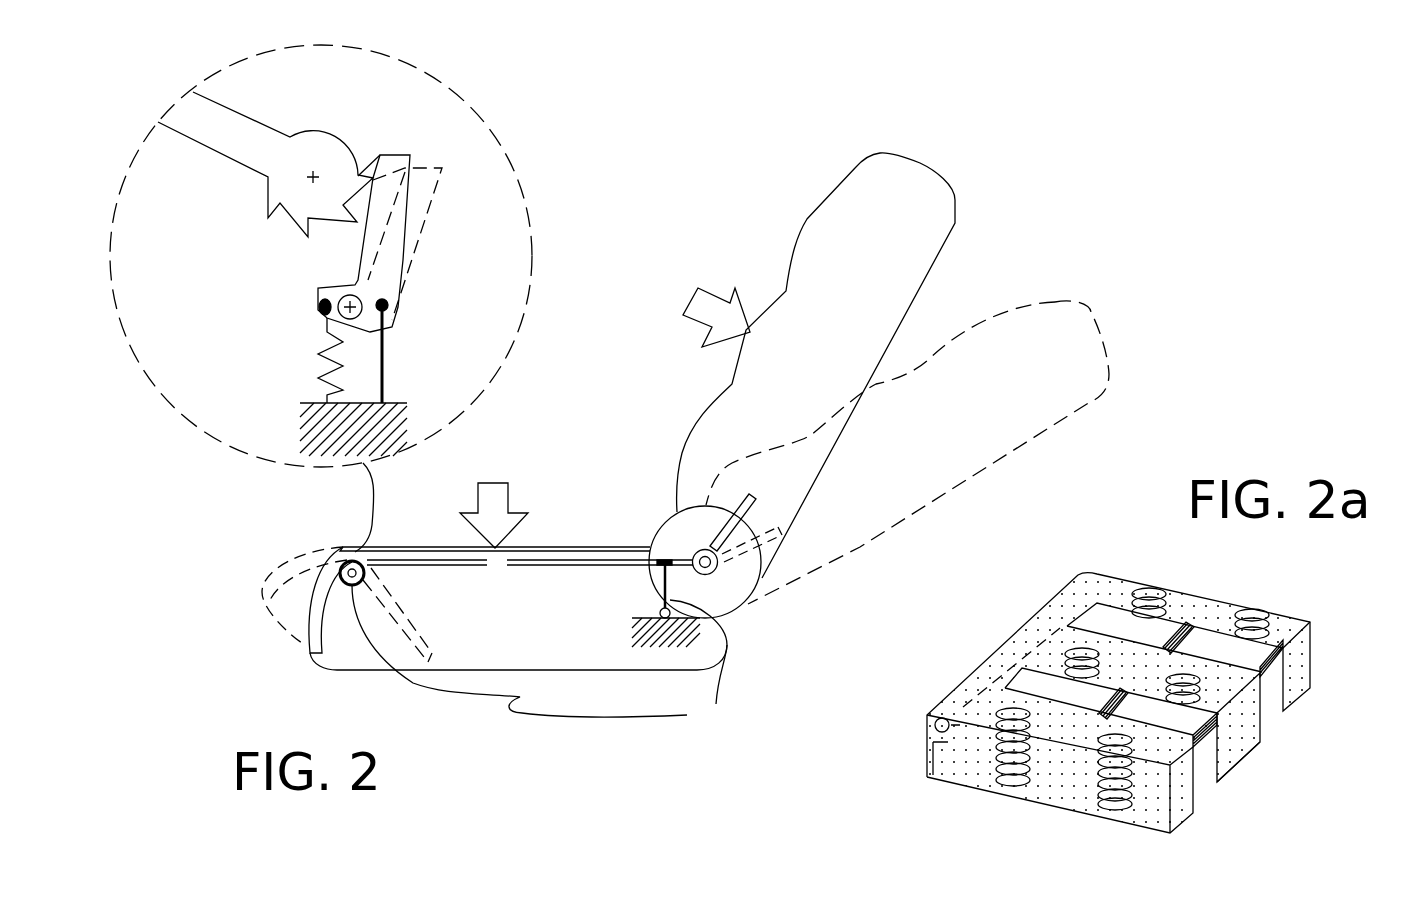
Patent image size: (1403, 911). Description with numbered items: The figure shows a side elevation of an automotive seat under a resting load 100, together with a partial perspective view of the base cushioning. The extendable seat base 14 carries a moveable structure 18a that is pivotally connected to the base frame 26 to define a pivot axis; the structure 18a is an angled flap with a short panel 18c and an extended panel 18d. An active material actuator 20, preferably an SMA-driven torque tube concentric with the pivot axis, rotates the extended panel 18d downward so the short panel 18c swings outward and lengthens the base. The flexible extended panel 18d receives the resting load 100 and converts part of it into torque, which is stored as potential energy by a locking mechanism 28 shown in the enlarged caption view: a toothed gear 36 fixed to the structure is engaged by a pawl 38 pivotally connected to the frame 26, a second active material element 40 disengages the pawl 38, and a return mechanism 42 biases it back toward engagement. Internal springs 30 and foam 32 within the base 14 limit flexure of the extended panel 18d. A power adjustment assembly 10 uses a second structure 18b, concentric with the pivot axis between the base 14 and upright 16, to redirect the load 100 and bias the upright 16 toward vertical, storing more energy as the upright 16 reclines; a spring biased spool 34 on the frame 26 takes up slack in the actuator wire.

In FIG. 2, the power adjustment assembly 10 is at (683, 140).
In FIG. 2, the extendable seat base 14 is at (522, 619).
In FIG. 2A, the extendable seat base 14 is at (987, 832).
In FIG. 2, the upright 16 is at (830, 349).
In FIG. 2, the moveable structure 18a is at (306, 554).
In FIG. 2A, the moveable structure 18a is at (1100, 604).
In FIG. 2, the second structure 18b is at (702, 533).
In FIG. 2A, the second structure 18b is at (1273, 646).
In FIG. 2, the short panel 18c is at (310, 613).
In FIG. 2, the extended panel 18d is at (573, 560).
In FIG. 2A, the extended panel 18d is at (1217, 645).
In FIG. 2, the active material actuator 20 is at (542, 659).
In FIG. 2, the base frame 26 is at (658, 648).
In FIG. 2, the locking mechanism 28 is at (485, 120).
In FIG. 2A, the springs 30 is at (1132, 803).
In FIG. 2A, the foam 32 is at (1235, 737).
In FIG. 2, the spring biased spool 34 is at (660, 613).
In FIG. 2, the toothed gear 36 is at (315, 133).
In FIG. 2, the pawl 38 is at (403, 270).
In FIG. 2, the second active material element 40 is at (386, 345).
In FIG. 2, the return mechanism 42 is at (325, 340).
In FIG. 2, the resting load 100 is at (693, 292).